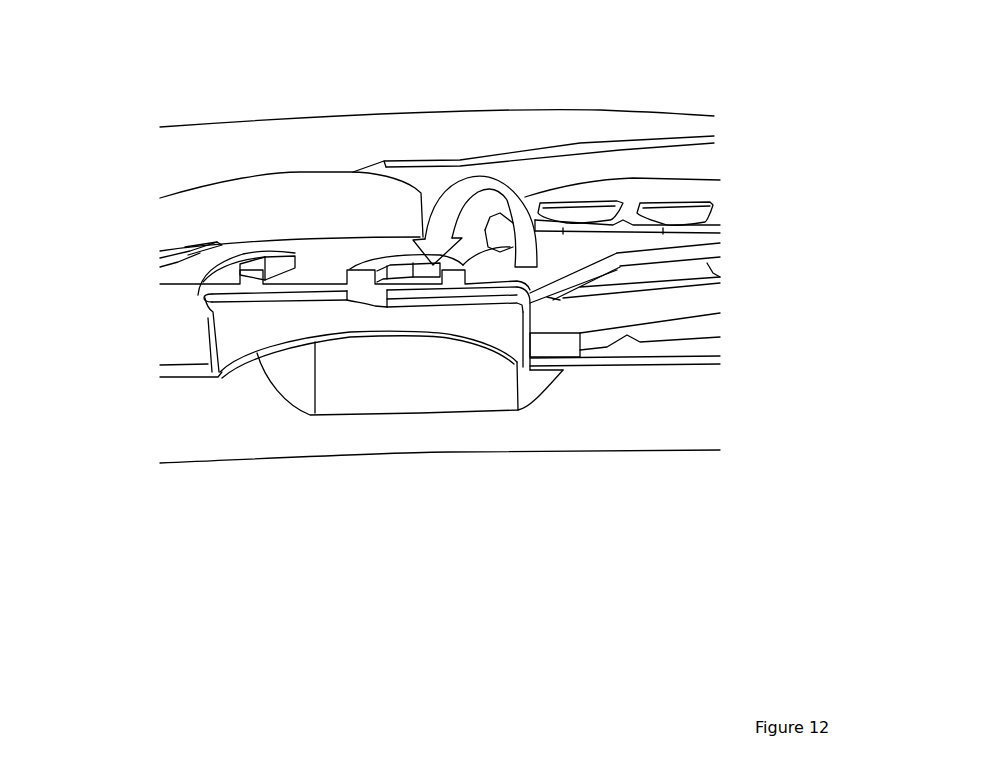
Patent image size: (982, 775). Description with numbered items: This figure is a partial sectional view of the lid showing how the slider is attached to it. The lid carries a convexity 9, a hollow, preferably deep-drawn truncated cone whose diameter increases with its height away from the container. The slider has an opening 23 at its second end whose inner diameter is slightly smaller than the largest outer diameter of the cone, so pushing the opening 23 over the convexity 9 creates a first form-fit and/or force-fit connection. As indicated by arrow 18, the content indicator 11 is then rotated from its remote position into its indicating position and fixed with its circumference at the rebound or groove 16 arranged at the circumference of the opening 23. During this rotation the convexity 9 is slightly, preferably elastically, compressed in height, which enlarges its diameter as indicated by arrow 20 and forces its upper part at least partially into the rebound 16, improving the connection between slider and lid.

The convexity 9 is at (527, 312).
The content indicator 11 is at (302, 293).
The rebound or groove 16 is at (211, 327).
The arrow 18 is at (518, 187).
The arrow 20 is at (366, 313).
The opening 23 is at (200, 354).